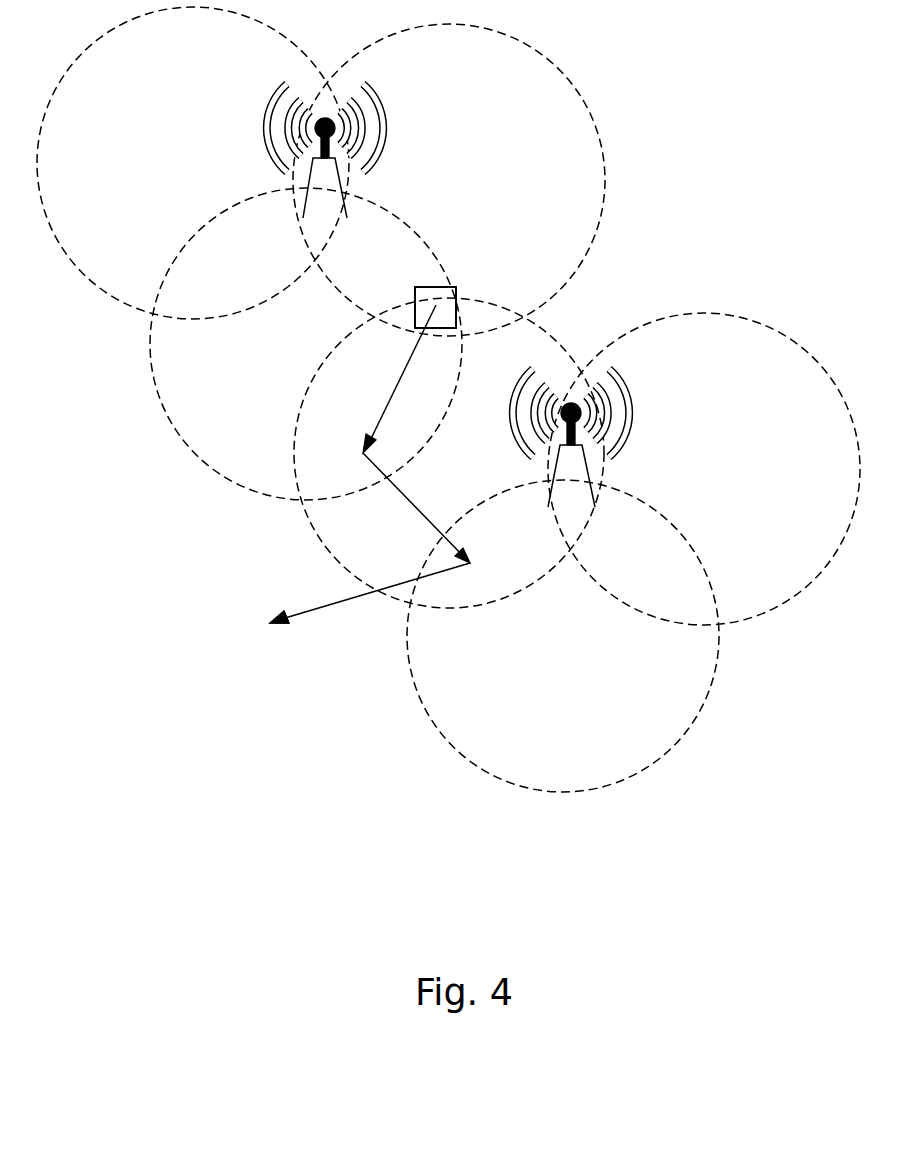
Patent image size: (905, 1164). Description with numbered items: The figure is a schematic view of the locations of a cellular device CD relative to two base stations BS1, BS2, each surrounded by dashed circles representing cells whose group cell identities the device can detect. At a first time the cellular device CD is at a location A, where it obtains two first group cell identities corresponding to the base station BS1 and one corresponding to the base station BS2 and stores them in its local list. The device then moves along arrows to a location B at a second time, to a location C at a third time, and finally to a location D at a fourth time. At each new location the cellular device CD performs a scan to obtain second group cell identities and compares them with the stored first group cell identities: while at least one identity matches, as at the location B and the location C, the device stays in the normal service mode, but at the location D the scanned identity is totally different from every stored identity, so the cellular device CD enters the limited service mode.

The base station BS1 is at (298, 257).
The base station BS2 is at (598, 544).
The cellular device CD is at (435, 287).
The location A is at (435, 309).
The location B is at (388, 379).
The location C is at (434, 516).
The location D is at (366, 610).